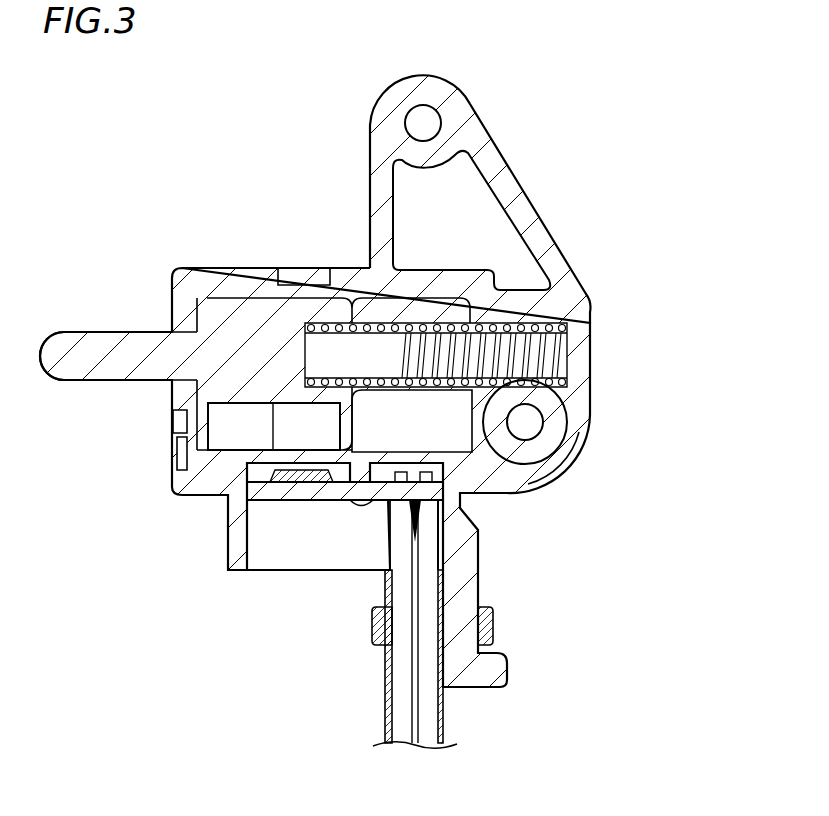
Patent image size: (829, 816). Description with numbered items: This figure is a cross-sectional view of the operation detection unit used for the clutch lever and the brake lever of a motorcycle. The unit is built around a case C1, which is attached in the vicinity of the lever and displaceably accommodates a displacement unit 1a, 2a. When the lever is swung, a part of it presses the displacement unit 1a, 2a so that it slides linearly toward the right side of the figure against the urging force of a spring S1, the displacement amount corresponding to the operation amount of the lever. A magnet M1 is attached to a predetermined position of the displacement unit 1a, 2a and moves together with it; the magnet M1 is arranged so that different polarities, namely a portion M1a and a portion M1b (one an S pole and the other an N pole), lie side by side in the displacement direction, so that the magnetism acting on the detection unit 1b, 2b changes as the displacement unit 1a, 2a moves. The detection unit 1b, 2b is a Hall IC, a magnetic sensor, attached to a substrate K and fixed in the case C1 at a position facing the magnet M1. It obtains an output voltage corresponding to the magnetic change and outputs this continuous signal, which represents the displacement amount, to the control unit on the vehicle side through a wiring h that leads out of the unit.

The case C1 is at (372, 190).
The displacement unit 1a is at (106, 328).
The displacement unit 2a is at (84, 347).
The spring S1 is at (566, 325).
The magnet M1 is at (226, 426).
The portion of the magnet M1a is at (247, 426).
The portion of the magnet M1b is at (305, 427).
The substrate K is at (252, 493).
The detection unit 1b is at (345, 542).
The detection unit 2b is at (312, 490).
The wiring h is at (397, 705).